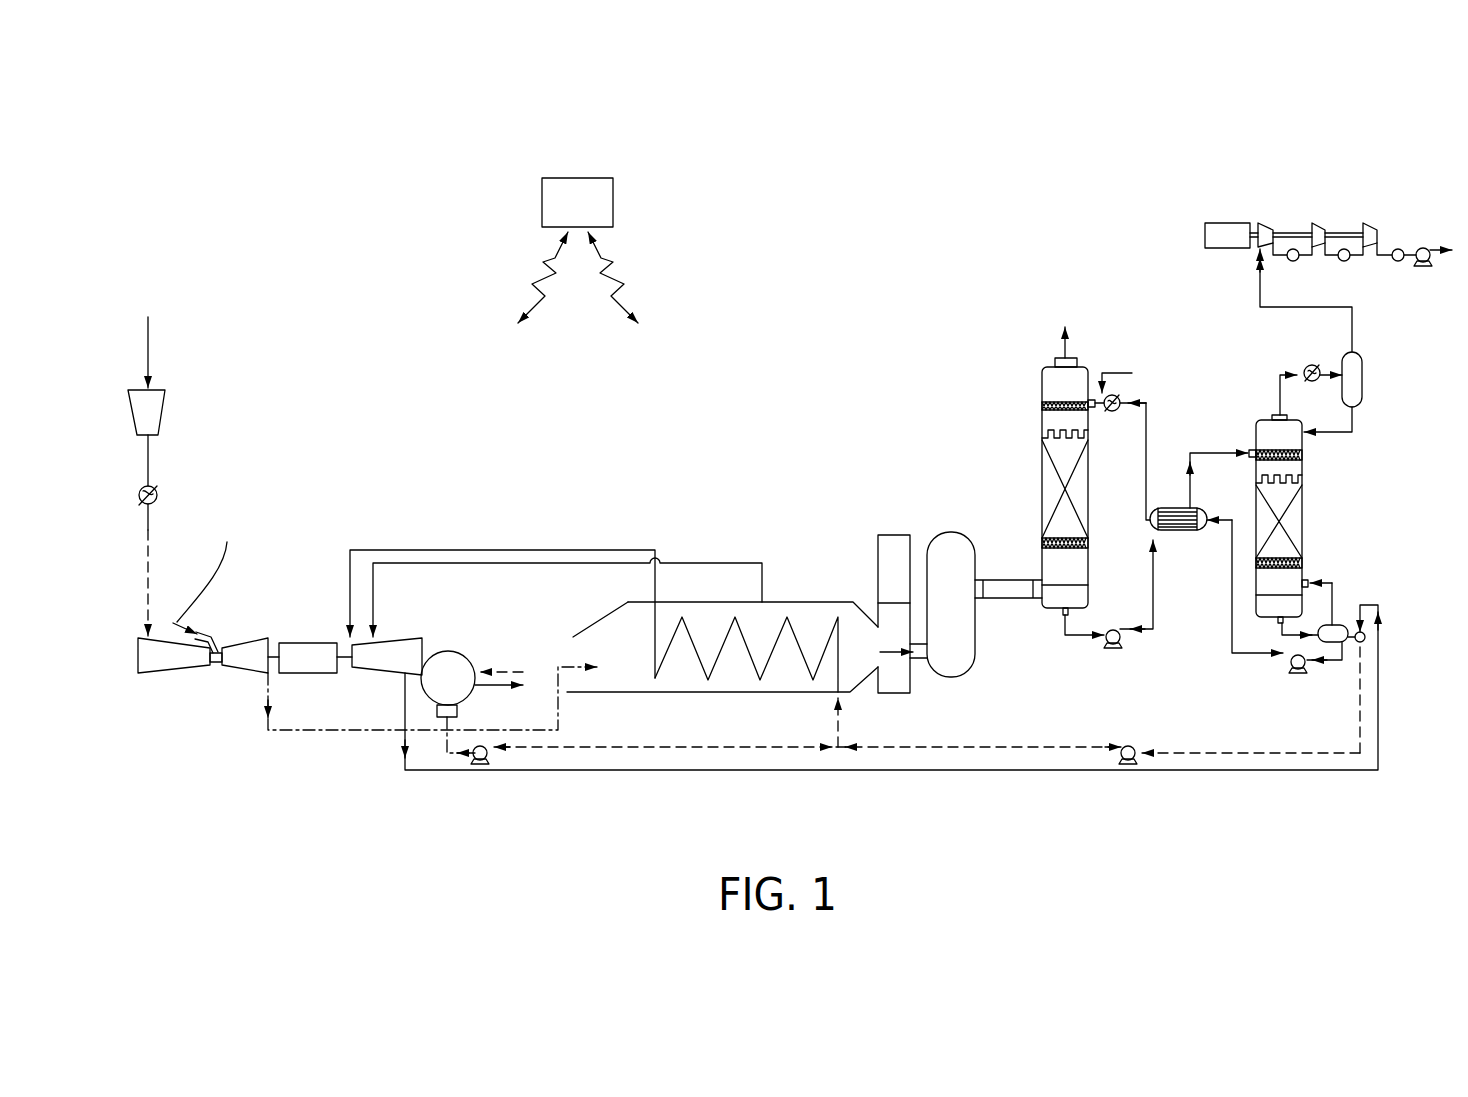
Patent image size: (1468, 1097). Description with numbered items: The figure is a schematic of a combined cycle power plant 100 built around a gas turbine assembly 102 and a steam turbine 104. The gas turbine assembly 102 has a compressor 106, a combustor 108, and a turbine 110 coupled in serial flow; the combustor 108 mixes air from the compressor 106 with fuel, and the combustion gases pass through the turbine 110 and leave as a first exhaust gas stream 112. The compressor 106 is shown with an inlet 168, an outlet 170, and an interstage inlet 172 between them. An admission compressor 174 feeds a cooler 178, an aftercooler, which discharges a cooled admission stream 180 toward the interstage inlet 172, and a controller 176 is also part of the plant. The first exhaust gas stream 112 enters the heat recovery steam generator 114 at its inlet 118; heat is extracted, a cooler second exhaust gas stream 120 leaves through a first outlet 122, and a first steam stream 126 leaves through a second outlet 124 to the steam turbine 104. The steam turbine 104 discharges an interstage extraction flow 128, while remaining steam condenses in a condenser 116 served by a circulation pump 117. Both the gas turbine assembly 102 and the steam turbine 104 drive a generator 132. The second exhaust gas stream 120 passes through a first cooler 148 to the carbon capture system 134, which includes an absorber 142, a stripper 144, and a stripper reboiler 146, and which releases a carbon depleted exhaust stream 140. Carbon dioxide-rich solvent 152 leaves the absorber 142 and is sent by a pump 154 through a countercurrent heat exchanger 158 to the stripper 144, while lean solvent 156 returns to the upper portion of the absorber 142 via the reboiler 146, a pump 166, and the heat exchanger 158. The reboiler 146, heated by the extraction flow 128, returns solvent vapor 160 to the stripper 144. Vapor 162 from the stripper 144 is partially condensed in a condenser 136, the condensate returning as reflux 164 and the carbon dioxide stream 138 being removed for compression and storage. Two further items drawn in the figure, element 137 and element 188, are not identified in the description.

The combined cycle power plant 100 is at (1103, 158).
The gas turbine assembly 102 is at (217, 732).
The steam turbine 104 is at (398, 637).
The compressor 106 is at (157, 675).
The combustor 108 is at (208, 634).
The turbine 110 is at (252, 638).
The first exhaust gas stream 112 is at (268, 690).
The heat recovery steam generator 114 is at (712, 713).
The condenser 116 is at (425, 697).
The circulation pump 117 is at (488, 758).
The inlet 118 is at (568, 648).
The second exhaust gas stream 120 is at (885, 655).
The first outlet 122 is at (860, 630).
The second outlet 124 is at (667, 592).
The first steam stream 126 is at (592, 551).
The interstage extraction flow 128 is at (405, 748).
The generator 132 is at (300, 674).
The carbon capture system 134 is at (1151, 226).
The condenser 136 is at (1362, 378).
The condenser 137 is at (1110, 412).
The carbon dioxide stream 138 is at (1427, 250).
The carbon depleted exhaust stream 140 is at (1065, 353).
The absorber 142 is at (1040, 390).
The stripper 144 is at (1303, 467).
The stripper reboiler 146 is at (1345, 618).
The first cooler 148 is at (970, 673).
The solvent 152 is at (1078, 636).
The pump 154 is at (1110, 630).
The solvent 156 is at (1295, 635).
The heat exchanger 158 is at (1180, 531).
The solvent vapor 160 is at (1332, 583).
The vapor 162 is at (1289, 374).
The reflux 164 is at (1360, 432).
The pump 166 is at (1290, 669).
The inlet 168 is at (130, 654).
The outlet 170 is at (216, 678).
The interstage inlet 172 is at (158, 634).
The admission compressor 174 is at (162, 413).
The controller 176 is at (600, 215).
The cooler 178 is at (190, 480).
The cooled admission stream 180 is at (147, 567).
The steam line 188 is at (1003, 600).